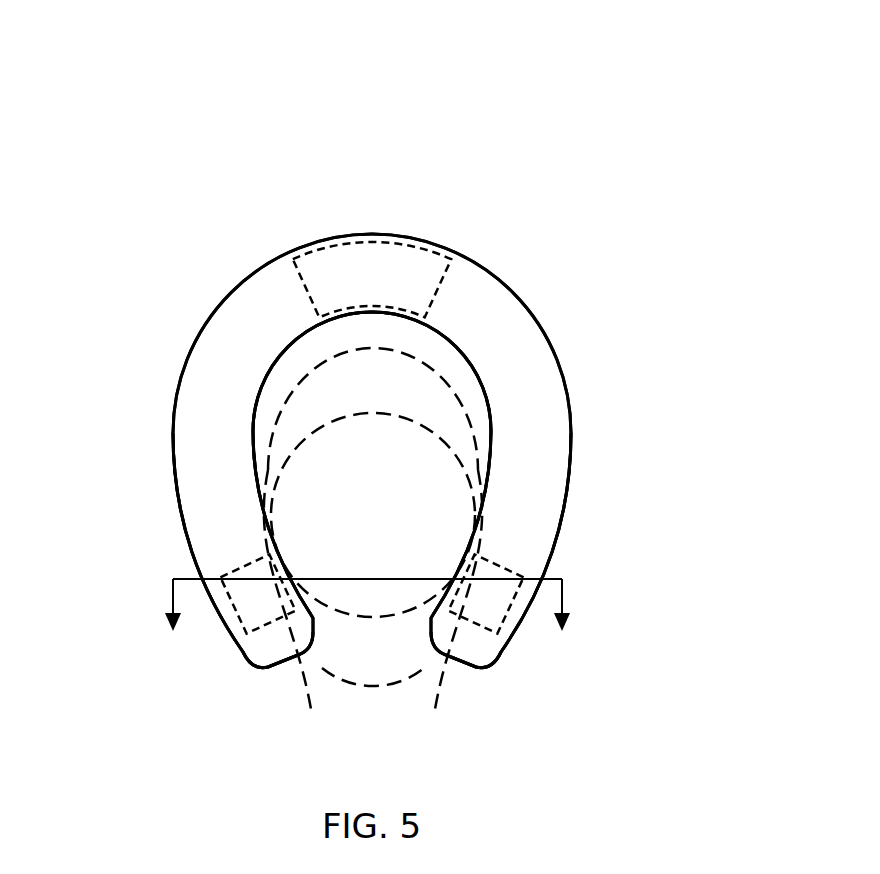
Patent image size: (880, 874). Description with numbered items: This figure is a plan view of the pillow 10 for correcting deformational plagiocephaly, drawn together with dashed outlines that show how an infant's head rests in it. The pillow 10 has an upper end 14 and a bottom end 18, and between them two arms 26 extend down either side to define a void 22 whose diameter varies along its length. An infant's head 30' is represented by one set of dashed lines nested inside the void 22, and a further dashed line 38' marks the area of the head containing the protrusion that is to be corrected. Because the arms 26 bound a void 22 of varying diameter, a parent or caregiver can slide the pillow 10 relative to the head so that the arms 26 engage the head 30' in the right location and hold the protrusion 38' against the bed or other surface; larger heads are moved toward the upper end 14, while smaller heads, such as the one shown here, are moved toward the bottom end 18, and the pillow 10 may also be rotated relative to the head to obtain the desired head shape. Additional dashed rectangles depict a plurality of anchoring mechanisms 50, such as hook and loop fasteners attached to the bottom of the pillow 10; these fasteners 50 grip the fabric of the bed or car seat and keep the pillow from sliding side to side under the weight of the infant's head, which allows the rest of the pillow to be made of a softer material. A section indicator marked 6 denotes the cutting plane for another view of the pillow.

The pillow 10 is at (575, 127).
The upper end 14 is at (270, 283).
The void 22 is at (302, 355).
The arms 26 is at (197, 462).
The bottom end 18 is at (470, 660).
The infant's head 30' is at (478, 475).
The protrusion area of head 38' is at (324, 593).
The anchoring mechanisms 50 is at (352, 258).
The section line 6- 6 is at (376, 601).